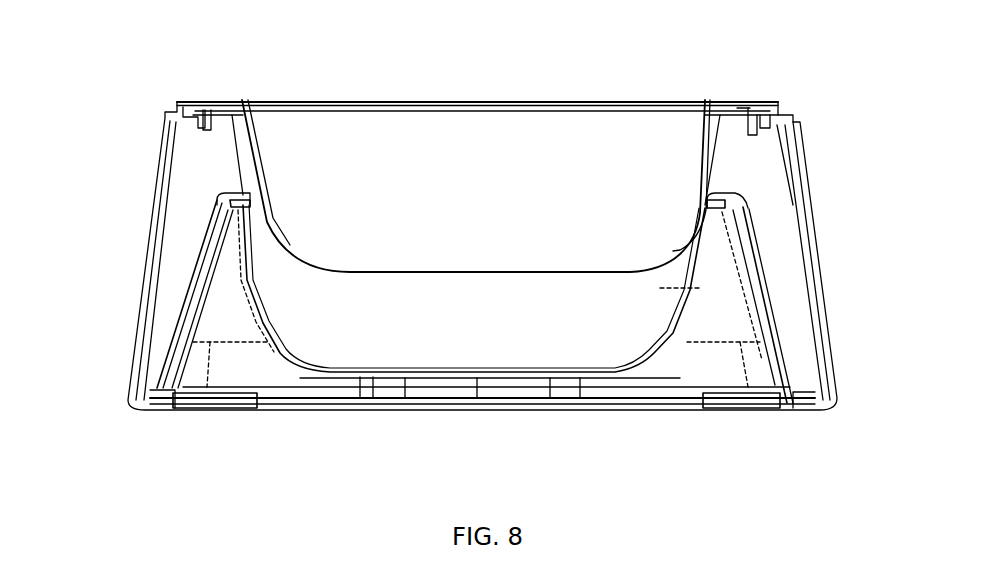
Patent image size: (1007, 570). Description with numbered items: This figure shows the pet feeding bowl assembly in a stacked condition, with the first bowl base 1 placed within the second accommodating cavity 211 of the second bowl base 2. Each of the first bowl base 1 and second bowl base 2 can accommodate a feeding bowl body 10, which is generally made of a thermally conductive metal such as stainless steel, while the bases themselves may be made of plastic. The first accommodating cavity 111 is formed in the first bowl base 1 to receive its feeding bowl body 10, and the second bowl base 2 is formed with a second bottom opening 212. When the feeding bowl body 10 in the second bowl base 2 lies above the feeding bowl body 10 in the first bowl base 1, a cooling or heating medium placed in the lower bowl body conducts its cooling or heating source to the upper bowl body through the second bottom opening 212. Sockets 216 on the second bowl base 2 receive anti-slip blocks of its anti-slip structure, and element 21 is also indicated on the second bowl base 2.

The first bowl base 1 is at (200, 283).
The second bowl base 2 is at (810, 218).
The feeding bowl body 10 is at (417, 270).
The support leg 21 is at (172, 363).
The first accommodating cavity 111 is at (700, 290).
The second accommodating cavity 211 is at (240, 144).
The second bottom opening 212 is at (263, 242).
The socket 216 is at (752, 160).